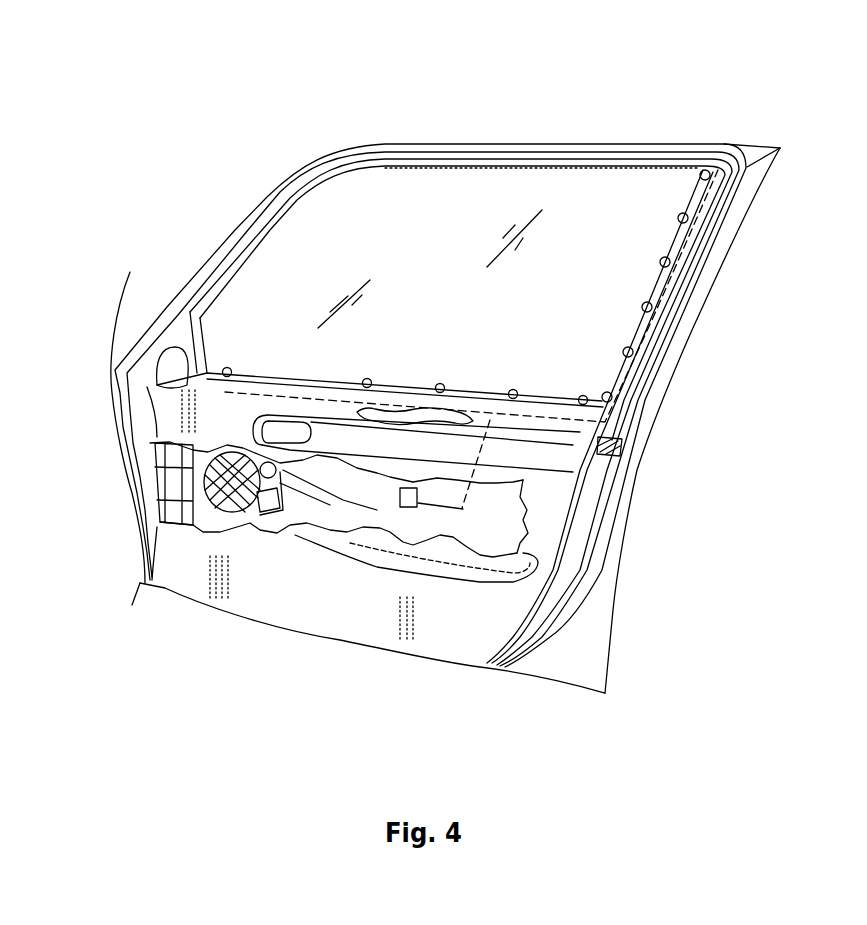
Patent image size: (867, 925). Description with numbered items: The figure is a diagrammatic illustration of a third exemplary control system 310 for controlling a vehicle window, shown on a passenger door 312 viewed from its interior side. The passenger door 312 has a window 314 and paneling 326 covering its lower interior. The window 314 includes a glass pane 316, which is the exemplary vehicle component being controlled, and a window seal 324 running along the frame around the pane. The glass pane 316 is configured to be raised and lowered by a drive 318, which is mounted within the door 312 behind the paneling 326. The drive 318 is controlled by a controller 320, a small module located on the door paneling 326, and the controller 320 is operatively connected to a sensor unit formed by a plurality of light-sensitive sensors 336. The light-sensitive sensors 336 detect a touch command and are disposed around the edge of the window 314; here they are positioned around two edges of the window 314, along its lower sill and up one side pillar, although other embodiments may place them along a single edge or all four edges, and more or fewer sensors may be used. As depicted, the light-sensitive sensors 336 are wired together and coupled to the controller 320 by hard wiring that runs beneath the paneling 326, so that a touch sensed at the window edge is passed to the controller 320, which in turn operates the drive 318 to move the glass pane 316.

The control system 310 is at (490, 95).
The passenger door 312 is at (781, 148).
The window 314 is at (687, 160).
The glass pane 316 is at (610, 205).
The drive 318 is at (215, 500).
The controller 320 is at (418, 506).
The window seal 324 is at (566, 165).
The paneling 326 is at (540, 500).
The light-sensitive sensors 336 is at (300, 372).